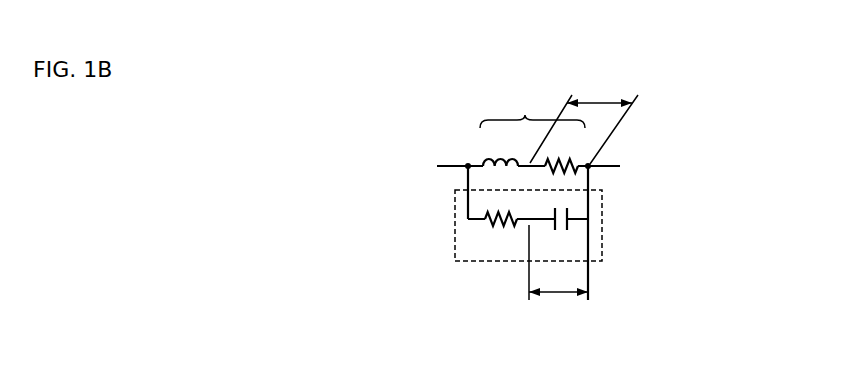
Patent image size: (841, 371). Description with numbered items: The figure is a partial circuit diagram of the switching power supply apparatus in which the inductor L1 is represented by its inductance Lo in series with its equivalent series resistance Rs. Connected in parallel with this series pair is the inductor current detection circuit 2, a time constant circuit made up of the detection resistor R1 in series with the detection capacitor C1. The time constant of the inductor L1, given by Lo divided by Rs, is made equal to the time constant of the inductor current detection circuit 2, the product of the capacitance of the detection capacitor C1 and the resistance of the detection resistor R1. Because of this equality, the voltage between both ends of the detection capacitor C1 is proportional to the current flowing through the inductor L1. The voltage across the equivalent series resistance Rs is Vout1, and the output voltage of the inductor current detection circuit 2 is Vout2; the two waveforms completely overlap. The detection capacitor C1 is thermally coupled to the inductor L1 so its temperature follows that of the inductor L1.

The inductor current detection circuit 2 is at (455, 262).
The inductor L1 is at (532, 106).
The inductance Lo is at (500, 147).
The equivalent series resistance Rs is at (564, 150).
The detection resistor R1 is at (503, 235).
The detection capacitor C1 is at (561, 233).
The voltage between both ends of the equivalent series resistance Vout1 is at (584, 116).
The output voltage from the inductor current detection circuit Vout2 is at (557, 277).